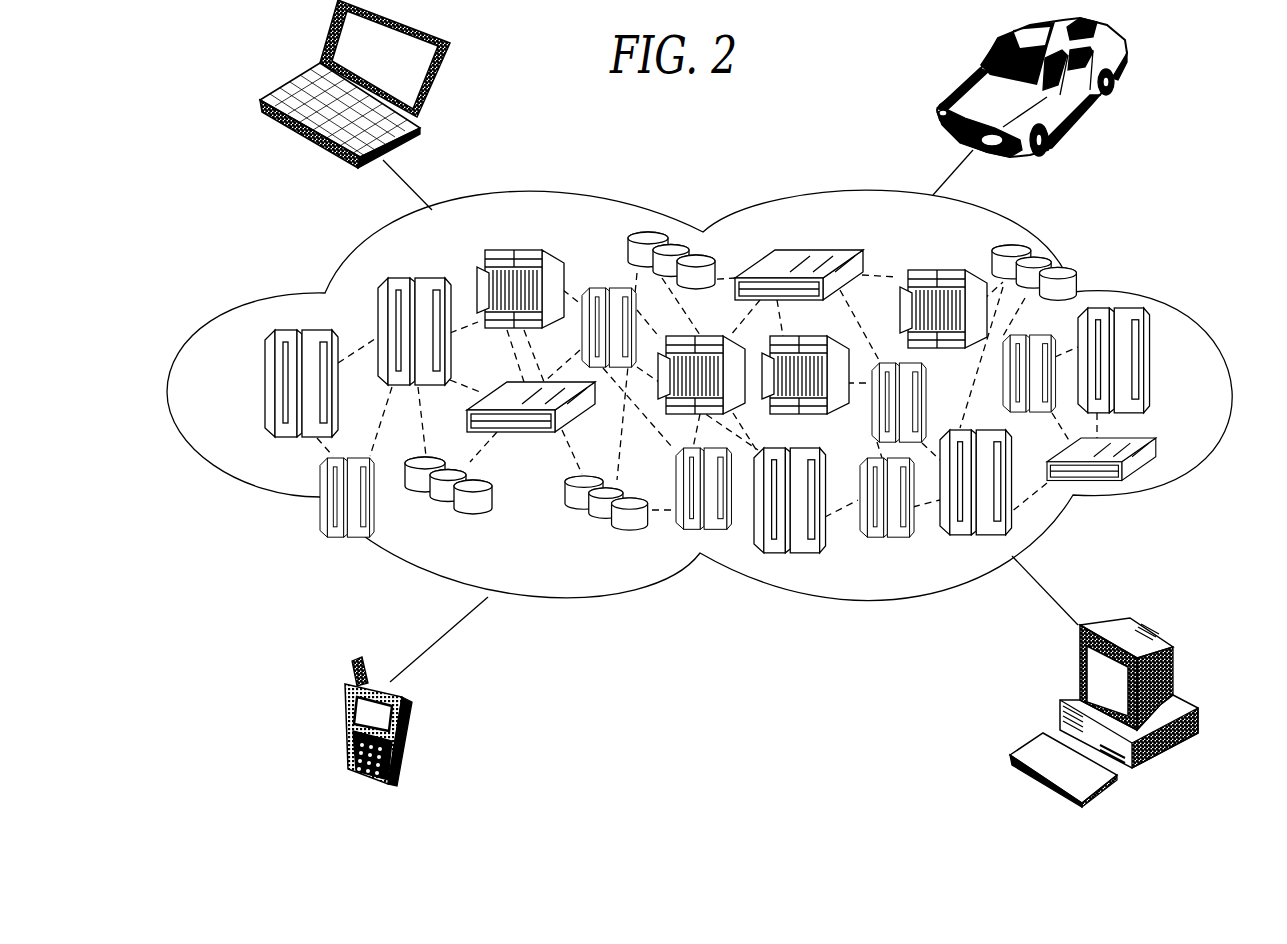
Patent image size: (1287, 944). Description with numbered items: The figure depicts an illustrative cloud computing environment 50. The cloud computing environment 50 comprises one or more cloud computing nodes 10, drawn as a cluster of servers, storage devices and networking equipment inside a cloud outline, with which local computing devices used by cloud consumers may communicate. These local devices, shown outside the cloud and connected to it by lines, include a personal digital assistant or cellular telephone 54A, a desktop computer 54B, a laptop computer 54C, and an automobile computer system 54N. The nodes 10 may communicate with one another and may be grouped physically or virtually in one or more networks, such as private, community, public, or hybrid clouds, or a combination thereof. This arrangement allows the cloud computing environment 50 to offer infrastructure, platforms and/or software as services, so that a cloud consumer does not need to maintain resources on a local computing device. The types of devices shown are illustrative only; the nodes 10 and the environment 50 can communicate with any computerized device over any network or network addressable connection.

The cloud computing environment 50 is at (1183, 305).
The cloud computing node 10 is at (1137, 477).
The personal digital assistant or cellular telephone 54A is at (413, 688).
The desktop computer 54B is at (1068, 692).
The laptop computer 54C is at (307, 69).
The automobile computer system 54N is at (962, 75).